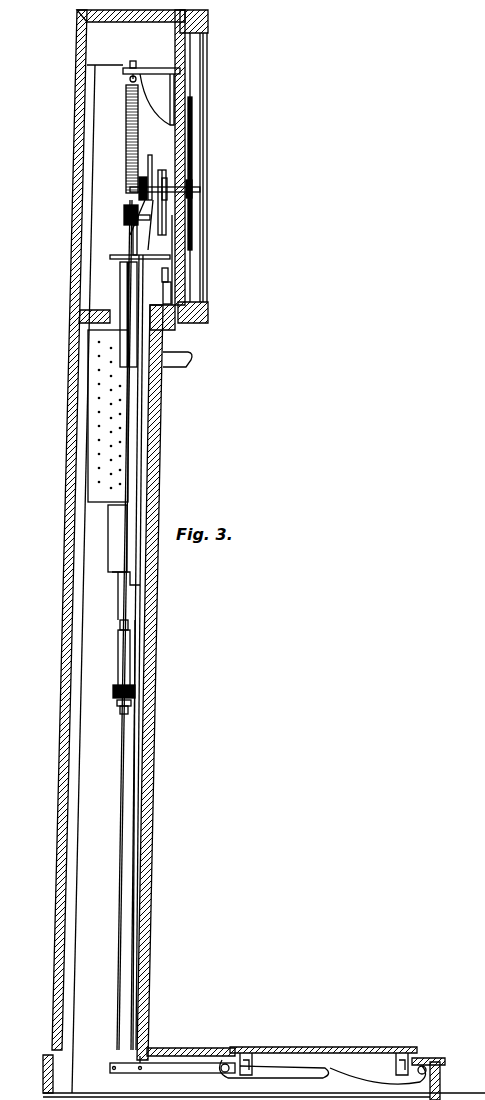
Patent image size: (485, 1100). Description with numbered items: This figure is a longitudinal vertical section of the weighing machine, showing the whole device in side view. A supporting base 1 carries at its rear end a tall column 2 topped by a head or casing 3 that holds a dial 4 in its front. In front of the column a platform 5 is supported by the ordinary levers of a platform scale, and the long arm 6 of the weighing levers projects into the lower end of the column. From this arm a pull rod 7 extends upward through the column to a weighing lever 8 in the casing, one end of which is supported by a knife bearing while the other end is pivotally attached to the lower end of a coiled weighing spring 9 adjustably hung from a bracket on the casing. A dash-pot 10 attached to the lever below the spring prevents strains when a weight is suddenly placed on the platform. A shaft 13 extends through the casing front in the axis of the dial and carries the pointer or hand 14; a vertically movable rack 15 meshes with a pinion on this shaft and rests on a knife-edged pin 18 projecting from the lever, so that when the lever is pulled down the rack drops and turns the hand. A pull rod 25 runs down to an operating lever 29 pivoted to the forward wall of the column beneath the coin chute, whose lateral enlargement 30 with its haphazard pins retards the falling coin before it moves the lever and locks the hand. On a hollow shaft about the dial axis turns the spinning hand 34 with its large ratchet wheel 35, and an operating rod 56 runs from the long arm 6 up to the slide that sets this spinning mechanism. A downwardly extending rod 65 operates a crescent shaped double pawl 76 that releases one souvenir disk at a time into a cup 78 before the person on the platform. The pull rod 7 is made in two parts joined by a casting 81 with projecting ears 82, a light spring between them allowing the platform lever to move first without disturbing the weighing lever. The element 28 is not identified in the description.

The supporting base 1 is at (176, 1048).
The column 2 is at (158, 798).
The casing 3 is at (77, 42).
The dial 4 is at (188, 85).
The platform 5 is at (300, 1047).
The long arm of the weighing levers 6 is at (198, 1062).
The pull rod 7 is at (130, 250).
The weighing lever 8 is at (124, 218).
The coiled weighing spring 9 is at (126, 115).
The dash-pot 10 is at (120, 343).
The shaft 13 is at (196, 190).
The pointer or hand 14 is at (196, 148).
The rack 15 is at (148, 160).
The pin 18 is at (133, 232).
The pull rod 25 is at (112, 262).
The slide block 28 is at (113, 532).
The operating lever 29 is at (128, 578).
The lateral enlargement 30 is at (100, 388).
The hand or pointer 34 is at (192, 235).
The large ratchet wheel 35 is at (167, 215).
The operating rod 56 is at (138, 860).
The rod 65 is at (168, 272).
The crescent shaped double pawl 76 is at (171, 290).
The cup 78 is at (193, 356).
The casting 81 is at (128, 645).
The projecting ears 82 is at (113, 692).